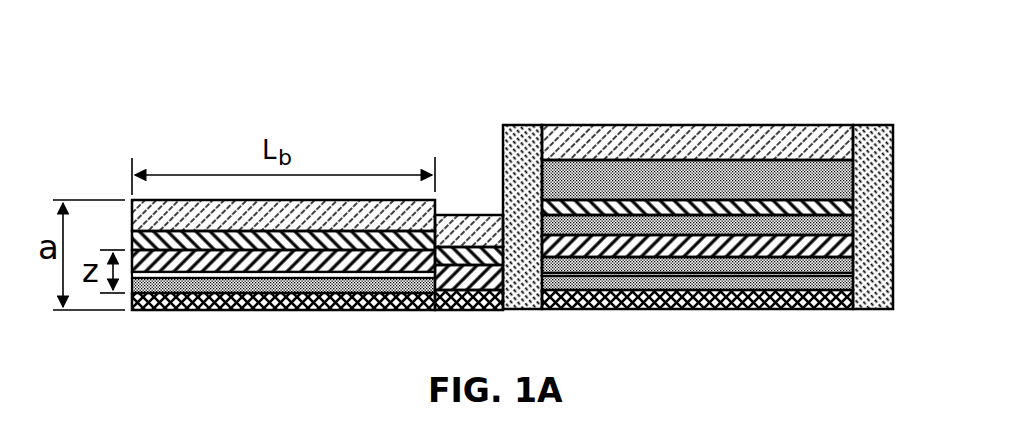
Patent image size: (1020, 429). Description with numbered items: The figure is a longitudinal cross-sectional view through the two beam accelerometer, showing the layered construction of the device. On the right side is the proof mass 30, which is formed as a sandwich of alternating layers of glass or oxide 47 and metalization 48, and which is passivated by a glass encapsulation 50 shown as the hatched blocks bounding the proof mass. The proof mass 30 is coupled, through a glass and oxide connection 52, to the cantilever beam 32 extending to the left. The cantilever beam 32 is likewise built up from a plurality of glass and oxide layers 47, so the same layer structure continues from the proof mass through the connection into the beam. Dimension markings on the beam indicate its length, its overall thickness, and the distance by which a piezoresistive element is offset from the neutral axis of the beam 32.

The proof mass 30 is at (782, 79).
The cantilever beam 32 is at (188, 106).
The glass or oxide layers 47 is at (377, 243).
The metalization 48 is at (647, 207).
The glass encapsulation 50 is at (511, 125).
The glass and oxide connection 52 is at (460, 213).